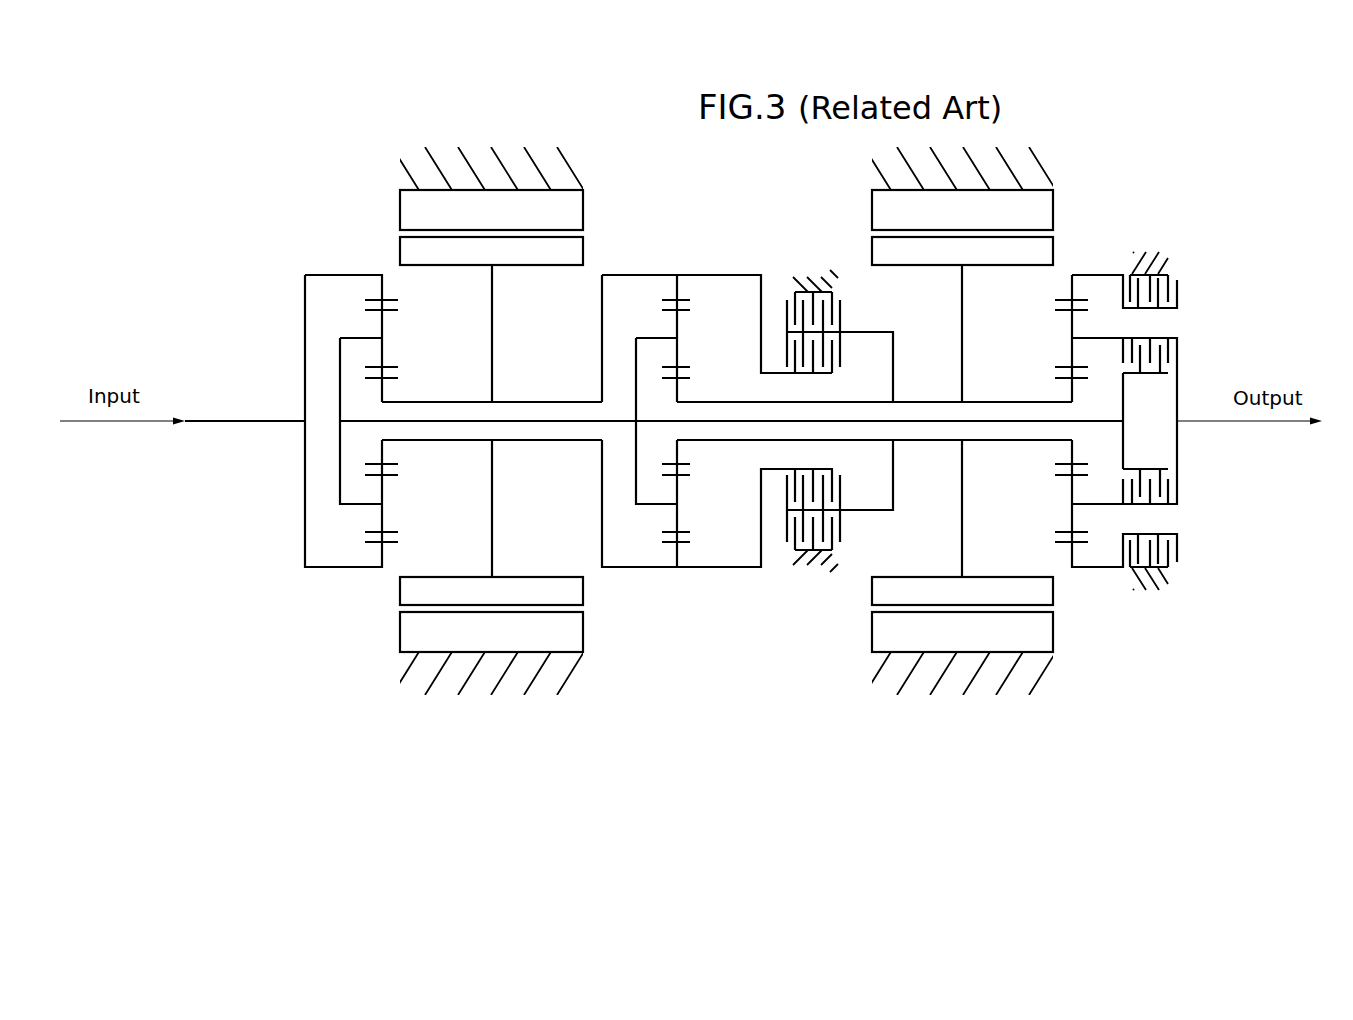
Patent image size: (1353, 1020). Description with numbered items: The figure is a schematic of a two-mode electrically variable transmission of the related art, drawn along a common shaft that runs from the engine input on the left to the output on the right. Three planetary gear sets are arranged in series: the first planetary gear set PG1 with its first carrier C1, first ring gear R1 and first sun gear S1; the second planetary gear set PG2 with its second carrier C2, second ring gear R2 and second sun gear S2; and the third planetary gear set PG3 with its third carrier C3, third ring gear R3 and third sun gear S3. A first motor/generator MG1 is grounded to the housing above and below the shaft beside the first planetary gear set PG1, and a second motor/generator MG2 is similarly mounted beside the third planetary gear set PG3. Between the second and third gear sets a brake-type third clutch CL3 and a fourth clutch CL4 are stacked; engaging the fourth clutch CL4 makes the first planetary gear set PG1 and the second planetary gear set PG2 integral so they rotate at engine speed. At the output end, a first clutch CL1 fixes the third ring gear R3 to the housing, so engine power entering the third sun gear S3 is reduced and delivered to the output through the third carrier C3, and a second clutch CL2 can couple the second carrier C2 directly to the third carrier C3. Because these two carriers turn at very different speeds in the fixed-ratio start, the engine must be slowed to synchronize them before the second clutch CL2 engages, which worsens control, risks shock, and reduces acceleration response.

The first planetary gear set PG1 is at (338, 572).
The first carrier C1 is at (340, 380).
The first ring gear R1 is at (399, 302).
The first sun gear S1 is at (399, 378).
The first motor/generator MG1 is at (472, 439).
The second planetary gear set PG2 is at (684, 258).
The second carrier C2 is at (636, 480).
The second ring gear R2 is at (662, 300).
The second sun gear S2 is at (693, 467).
The third clutch CL3 is at (852, 301).
The fourth clutch CL4 is at (852, 355).
The second motor/generator MG2 is at (944, 439).
The third planetary gear set PG3 is at (1096, 586).
The third carrier C3 is at (1100, 338).
The third ring gear R3 is at (1054, 542).
The third sun gear S3 is at (1054, 464).
The first clutch CL1 is at (1184, 280).
The second clutch CL2 is at (1188, 352).